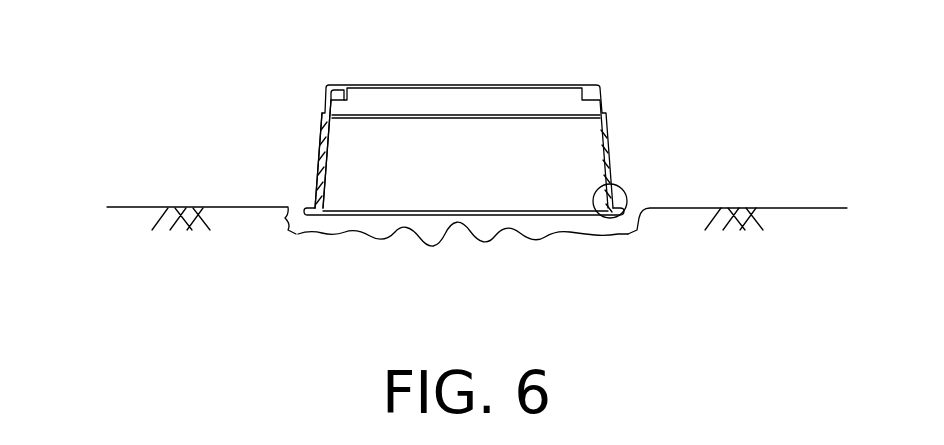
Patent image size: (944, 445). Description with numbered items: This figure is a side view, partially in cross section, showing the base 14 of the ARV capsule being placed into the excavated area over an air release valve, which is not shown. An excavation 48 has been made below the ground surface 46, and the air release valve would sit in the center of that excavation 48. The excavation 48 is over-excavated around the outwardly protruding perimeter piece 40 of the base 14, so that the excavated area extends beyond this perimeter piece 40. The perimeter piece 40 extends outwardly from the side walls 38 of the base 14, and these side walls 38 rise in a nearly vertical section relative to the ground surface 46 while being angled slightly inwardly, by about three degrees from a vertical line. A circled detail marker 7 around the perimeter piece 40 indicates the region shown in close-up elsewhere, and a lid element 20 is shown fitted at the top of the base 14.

The base 14 is at (608, 130).
The lid 20 is at (325, 98).
The side walls 38 is at (322, 163).
The outwardly protruding perimeter piece 40 is at (623, 216).
The detail view circle (FIG. 7) 7 is at (625, 195).
The ground surface 46 is at (132, 207).
The excavation 48 is at (293, 232).